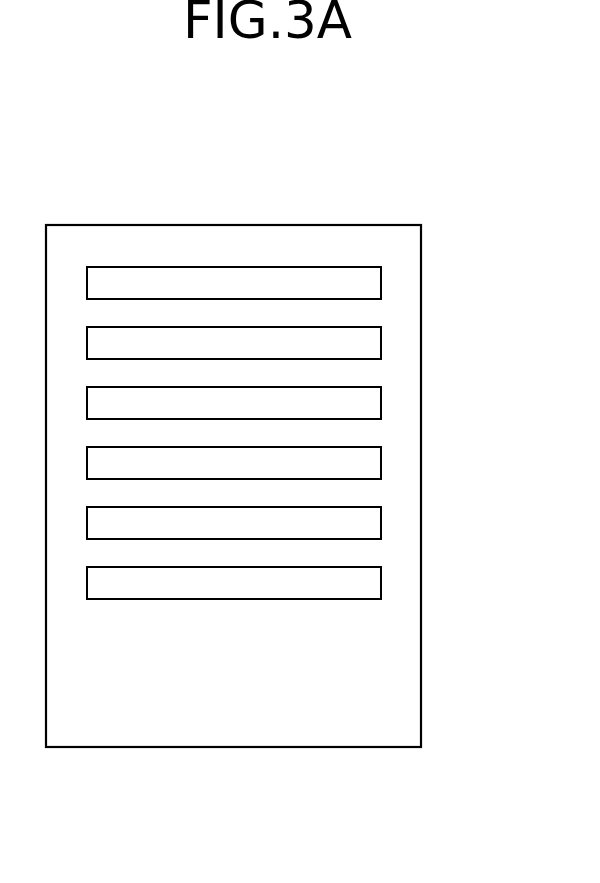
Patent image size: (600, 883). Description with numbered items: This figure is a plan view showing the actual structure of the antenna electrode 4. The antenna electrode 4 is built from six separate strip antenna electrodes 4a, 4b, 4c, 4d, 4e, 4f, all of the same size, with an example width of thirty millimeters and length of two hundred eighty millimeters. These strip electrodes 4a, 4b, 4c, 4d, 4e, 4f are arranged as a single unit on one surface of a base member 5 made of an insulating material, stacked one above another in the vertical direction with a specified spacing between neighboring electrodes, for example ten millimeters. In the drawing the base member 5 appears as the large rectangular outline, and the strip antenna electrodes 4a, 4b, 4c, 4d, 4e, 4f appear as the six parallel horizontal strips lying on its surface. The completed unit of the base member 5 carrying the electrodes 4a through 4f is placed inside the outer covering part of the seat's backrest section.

The antenna electrode 4 is at (165, 213).
The base member 5 is at (355, 246).
The strip antenna electrode 4a is at (381, 282).
The strip antenna electrode 4b is at (381, 342).
The strip antenna electrode 4c is at (381, 402).
The strip antenna electrode 4d is at (381, 462).
The strip antenna electrode 4e is at (381, 522).
The strip antenna electrode 4f is at (381, 582).